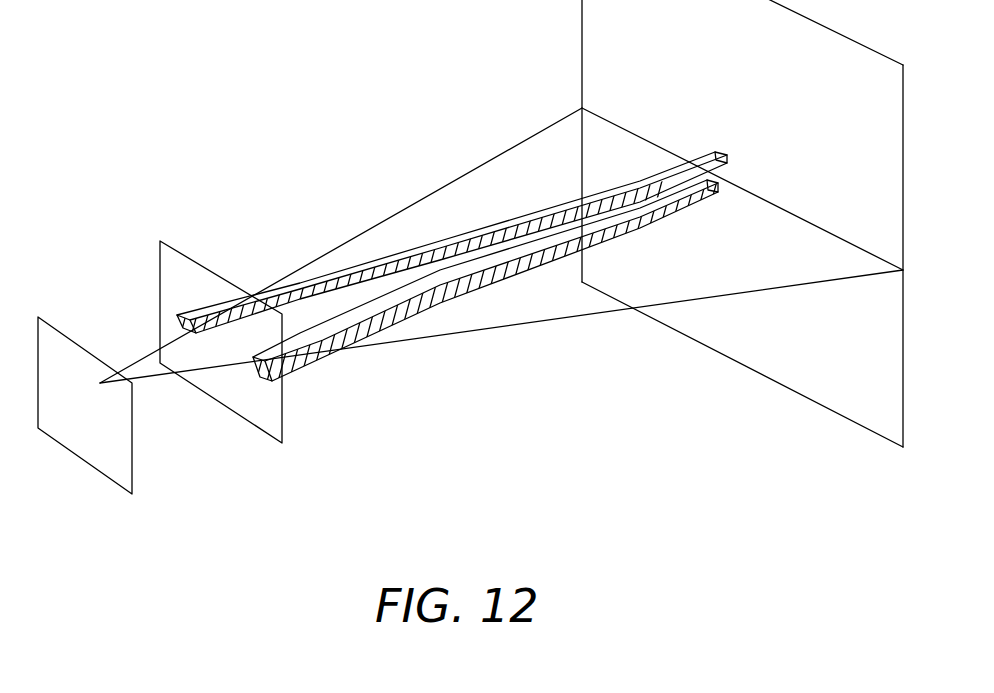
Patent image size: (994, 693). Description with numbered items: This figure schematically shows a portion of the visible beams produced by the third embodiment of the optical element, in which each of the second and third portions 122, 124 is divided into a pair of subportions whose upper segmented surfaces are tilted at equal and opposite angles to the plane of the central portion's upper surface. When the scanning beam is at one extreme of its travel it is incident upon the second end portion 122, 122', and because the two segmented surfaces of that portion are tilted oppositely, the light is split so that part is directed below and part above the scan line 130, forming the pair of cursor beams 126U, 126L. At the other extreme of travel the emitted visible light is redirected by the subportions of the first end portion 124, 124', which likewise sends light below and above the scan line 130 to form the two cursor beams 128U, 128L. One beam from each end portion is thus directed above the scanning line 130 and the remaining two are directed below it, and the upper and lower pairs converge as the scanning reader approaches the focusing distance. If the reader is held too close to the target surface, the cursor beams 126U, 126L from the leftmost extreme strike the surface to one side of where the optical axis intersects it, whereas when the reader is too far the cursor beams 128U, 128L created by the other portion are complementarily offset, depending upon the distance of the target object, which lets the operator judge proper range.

The second end portion 122 is at (141, 323).
The first panel (alternate) 122' is at (141, 323).
The first end portion 124 is at (260, 324).
The second panel (alternate) 124' is at (260, 324).
The cursor beam 126U is at (507, 221).
The cursor beam 126L is at (660, 174).
The cursor beam 128U is at (490, 263).
The cursor beam 128L is at (465, 295).
The scan line 130 is at (648, 141).